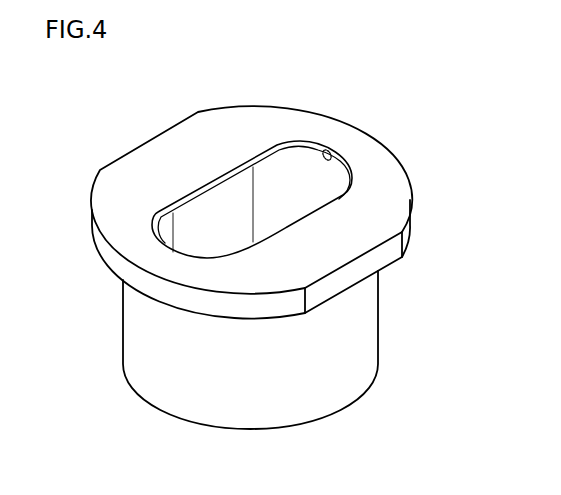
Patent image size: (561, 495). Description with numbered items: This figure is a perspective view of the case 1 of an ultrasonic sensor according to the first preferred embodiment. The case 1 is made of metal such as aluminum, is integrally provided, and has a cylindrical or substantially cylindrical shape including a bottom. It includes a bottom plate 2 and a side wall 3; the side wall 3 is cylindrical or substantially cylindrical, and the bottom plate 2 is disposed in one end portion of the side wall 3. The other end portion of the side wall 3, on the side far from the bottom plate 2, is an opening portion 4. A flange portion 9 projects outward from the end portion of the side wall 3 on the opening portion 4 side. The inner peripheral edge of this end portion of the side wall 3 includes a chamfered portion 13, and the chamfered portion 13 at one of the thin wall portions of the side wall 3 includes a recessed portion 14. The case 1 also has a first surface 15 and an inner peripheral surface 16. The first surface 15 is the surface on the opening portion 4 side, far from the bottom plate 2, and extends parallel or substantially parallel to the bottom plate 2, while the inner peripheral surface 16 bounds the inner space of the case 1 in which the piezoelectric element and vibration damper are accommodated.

The case 1 is at (318, 97).
The bottom plate 2 is at (263, 402).
The side wall 3 is at (328, 392).
The opening portion 4 is at (150, 226).
The flange portion 9 is at (411, 233).
The chamfered portion 13 is at (276, 144).
The recessed portion 14 is at (329, 148).
The first surface 15 is at (385, 178).
The inner peripheral surface 16 is at (213, 210).